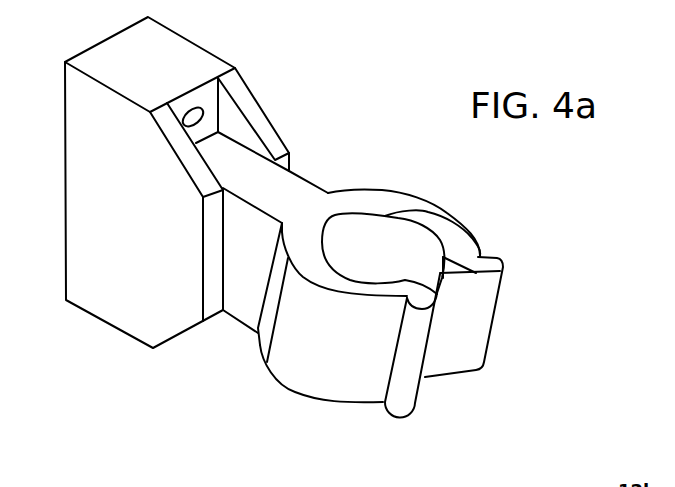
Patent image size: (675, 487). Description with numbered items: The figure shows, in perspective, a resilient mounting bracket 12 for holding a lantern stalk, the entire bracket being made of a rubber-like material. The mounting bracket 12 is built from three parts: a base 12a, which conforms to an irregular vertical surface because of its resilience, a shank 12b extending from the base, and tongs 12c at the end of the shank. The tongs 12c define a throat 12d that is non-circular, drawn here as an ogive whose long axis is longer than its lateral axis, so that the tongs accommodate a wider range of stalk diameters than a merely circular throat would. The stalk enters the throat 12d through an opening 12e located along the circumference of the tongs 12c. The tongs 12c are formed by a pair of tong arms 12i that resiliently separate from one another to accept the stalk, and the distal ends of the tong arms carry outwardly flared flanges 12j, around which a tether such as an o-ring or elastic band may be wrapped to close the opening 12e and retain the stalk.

The mounting bracket 12 is at (328, 83).
The base 12a is at (208, 25).
The shank 12b is at (328, 150).
The tongs 12c is at (481, 201).
The throat 12d is at (430, 272).
The opening 12e is at (467, 317).
The tong arms 12i is at (424, 220).
The outwardly flared flange 12j is at (485, 354).